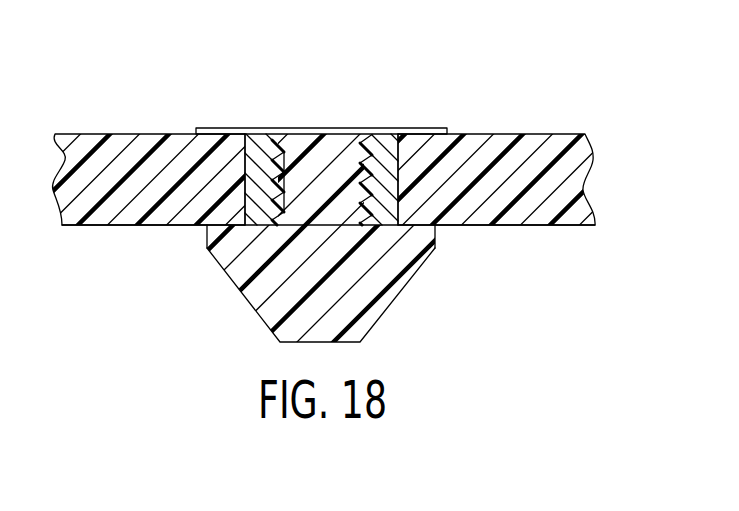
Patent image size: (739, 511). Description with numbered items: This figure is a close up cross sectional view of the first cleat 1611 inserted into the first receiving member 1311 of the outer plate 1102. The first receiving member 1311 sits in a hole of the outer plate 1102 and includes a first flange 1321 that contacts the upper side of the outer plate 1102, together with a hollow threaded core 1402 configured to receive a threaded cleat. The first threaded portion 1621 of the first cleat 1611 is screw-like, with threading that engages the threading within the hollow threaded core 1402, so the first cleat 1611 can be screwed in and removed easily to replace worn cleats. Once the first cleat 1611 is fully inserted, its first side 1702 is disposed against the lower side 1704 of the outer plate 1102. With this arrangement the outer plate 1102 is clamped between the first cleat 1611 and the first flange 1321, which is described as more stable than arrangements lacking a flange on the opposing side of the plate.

The outer plate 1102 is at (97, 217).
The first receiving member 1311 is at (373, 184).
The first flange 1321 is at (259, 138).
The hollow threaded core 1402 is at (287, 197).
The first threaded portion 1621 is at (338, 172).
The first cleat 1611 is at (373, 287).
The first side 1702 is at (243, 224).
The lower side 1704 is at (177, 227).